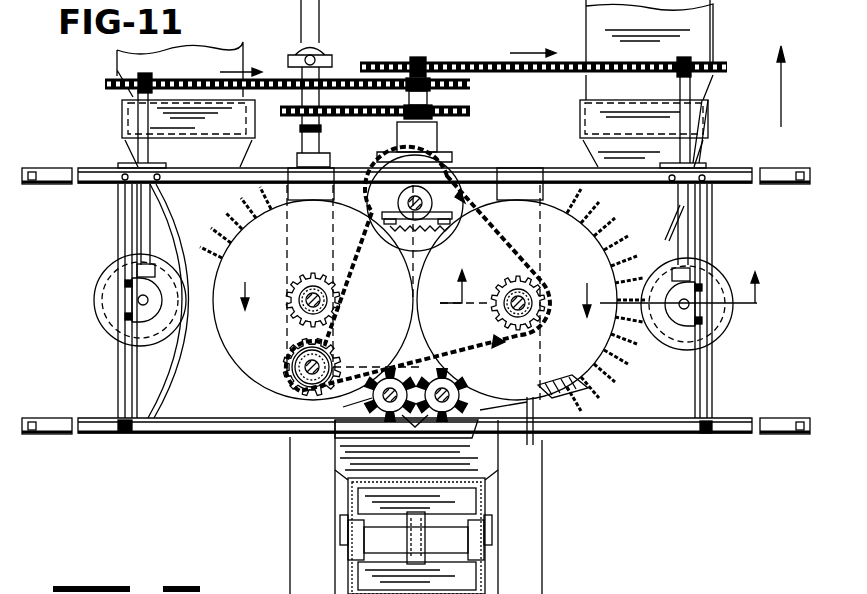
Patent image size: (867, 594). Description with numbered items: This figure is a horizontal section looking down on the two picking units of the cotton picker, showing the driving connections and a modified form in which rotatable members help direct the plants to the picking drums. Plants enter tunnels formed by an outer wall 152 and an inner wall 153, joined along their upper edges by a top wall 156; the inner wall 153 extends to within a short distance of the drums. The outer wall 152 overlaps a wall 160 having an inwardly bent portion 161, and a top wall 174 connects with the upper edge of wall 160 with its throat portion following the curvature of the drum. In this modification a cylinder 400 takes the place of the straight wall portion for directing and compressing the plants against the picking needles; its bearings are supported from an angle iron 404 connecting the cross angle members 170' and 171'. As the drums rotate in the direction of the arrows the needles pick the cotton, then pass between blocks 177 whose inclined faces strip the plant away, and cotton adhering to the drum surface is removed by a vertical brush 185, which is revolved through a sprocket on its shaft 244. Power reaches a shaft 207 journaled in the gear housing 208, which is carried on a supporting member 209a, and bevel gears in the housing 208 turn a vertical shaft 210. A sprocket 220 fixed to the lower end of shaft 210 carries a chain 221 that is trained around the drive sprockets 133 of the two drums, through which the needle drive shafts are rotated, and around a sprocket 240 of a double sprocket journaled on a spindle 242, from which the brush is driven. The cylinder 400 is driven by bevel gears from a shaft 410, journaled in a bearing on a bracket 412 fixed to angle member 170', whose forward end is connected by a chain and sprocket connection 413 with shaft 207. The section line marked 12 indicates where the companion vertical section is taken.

The section line 12- 12 is at (612, 283).
The drive sprocket 133 is at (293, 237).
The outer wall 152 is at (720, 33).
The inner wall 153 is at (572, 75).
The top wall 156 is at (243, 62).
The wall 160 is at (148, 372).
The inwardly bent portion 161 is at (670, 232).
The cross angle member 170' is at (395, 100).
The cross angle member 171' is at (208, 445).
The top wall 174 is at (600, 150).
The blocks 177 is at (552, 412).
The vertical brush 185 is at (380, 420).
The shaft 207 is at (413, 58).
The gear housing 208 is at (397, 137).
The supporting member 209a is at (382, 168).
The vertical shaft 210 is at (420, 198).
The sprocket 220 is at (443, 250).
The chain 221 is at (350, 257).
The sprocket 240 is at (332, 357).
The spindle 242 is at (297, 360).
The shaft 244 is at (380, 413).
The cylinder 400 is at (112, 307).
The angle iron 404 is at (395, 409).
The shaft 410 is at (143, 215).
The bracket 412 is at (124, 166).
The chain and sprocket connection 413 is at (128, 78).